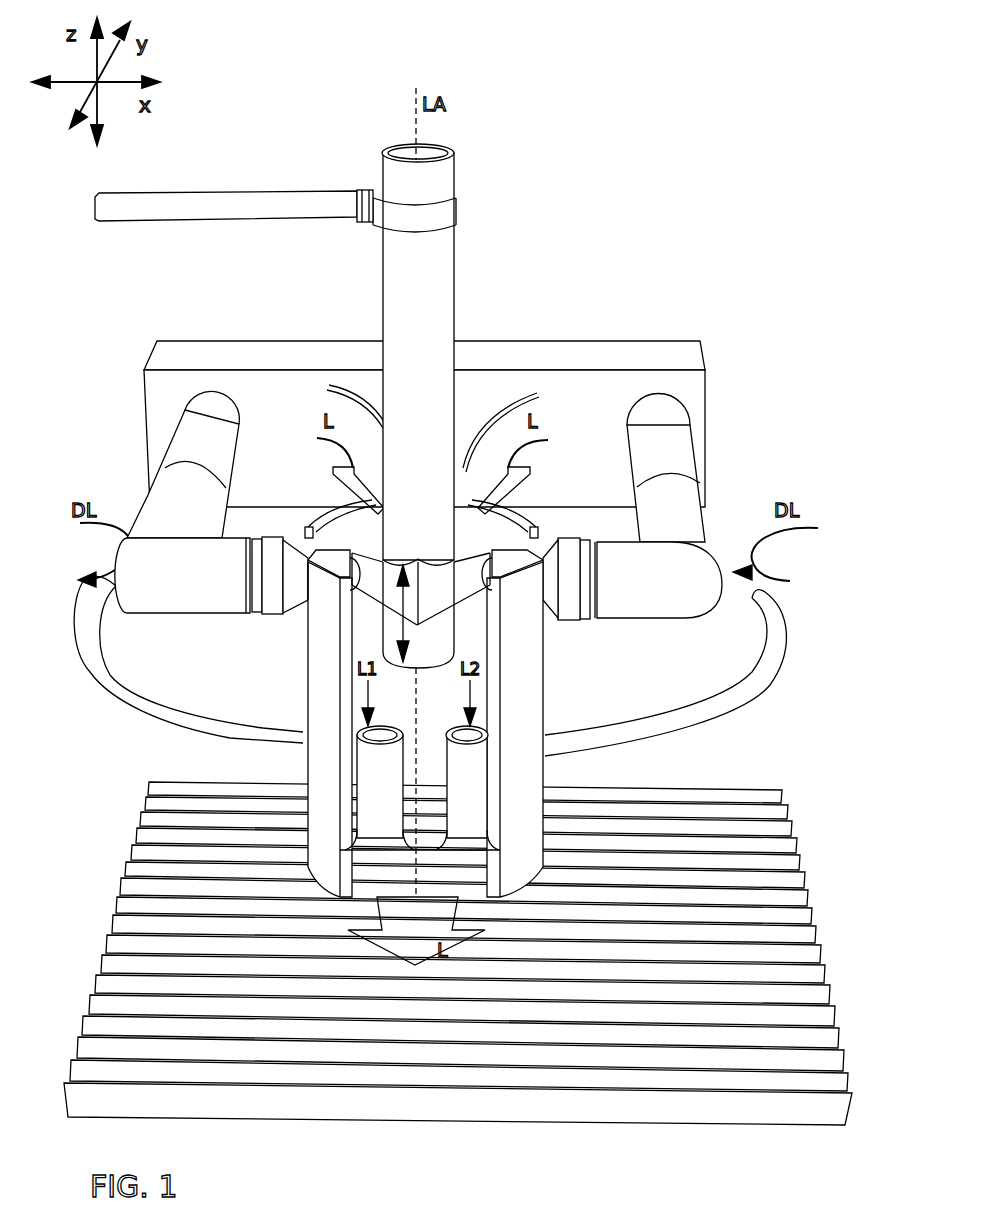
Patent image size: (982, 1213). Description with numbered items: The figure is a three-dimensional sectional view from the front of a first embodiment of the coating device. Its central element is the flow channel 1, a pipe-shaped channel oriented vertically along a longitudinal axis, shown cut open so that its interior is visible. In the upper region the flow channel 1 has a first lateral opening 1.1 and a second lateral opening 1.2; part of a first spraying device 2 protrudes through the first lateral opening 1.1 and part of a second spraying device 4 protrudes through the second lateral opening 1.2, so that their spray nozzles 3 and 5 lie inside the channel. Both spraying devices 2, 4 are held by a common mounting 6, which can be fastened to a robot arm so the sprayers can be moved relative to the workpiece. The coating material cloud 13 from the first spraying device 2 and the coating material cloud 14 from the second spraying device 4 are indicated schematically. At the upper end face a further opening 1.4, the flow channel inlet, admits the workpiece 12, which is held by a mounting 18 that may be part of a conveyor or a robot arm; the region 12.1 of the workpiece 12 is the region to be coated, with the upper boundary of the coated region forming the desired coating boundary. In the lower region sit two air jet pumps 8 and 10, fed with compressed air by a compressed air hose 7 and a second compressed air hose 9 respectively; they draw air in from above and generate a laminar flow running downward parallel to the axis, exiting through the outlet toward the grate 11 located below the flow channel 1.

The flow channel 1 is at (425, 686).
The first lateral opening 1.1 is at (312, 535).
The second lateral opening 1.2 is at (545, 535).
The further opening (flow channel inlet) 1.4 is at (370, 535).
The first spraying device 2 is at (156, 518).
The spray nozzle 3 is at (337, 562).
The second spraying device 4 is at (682, 487).
The spray nozzle 5 is at (505, 562).
The common mounting 6 is at (540, 355).
The compressed air hose 7 is at (97, 663).
The first air jet pump 8 is at (378, 720).
The second compressed air hose 9 is at (780, 657).
The second air jet pump 10 is at (458, 722).
The grate 11 is at (708, 793).
The workpiece 12 is at (447, 263).
The region of the workpiece to be coated 12.1 is at (427, 613).
The coating material cloud 13 is at (370, 555).
The coating material cloud 14 is at (462, 565).
The mounting 18 is at (205, 197).